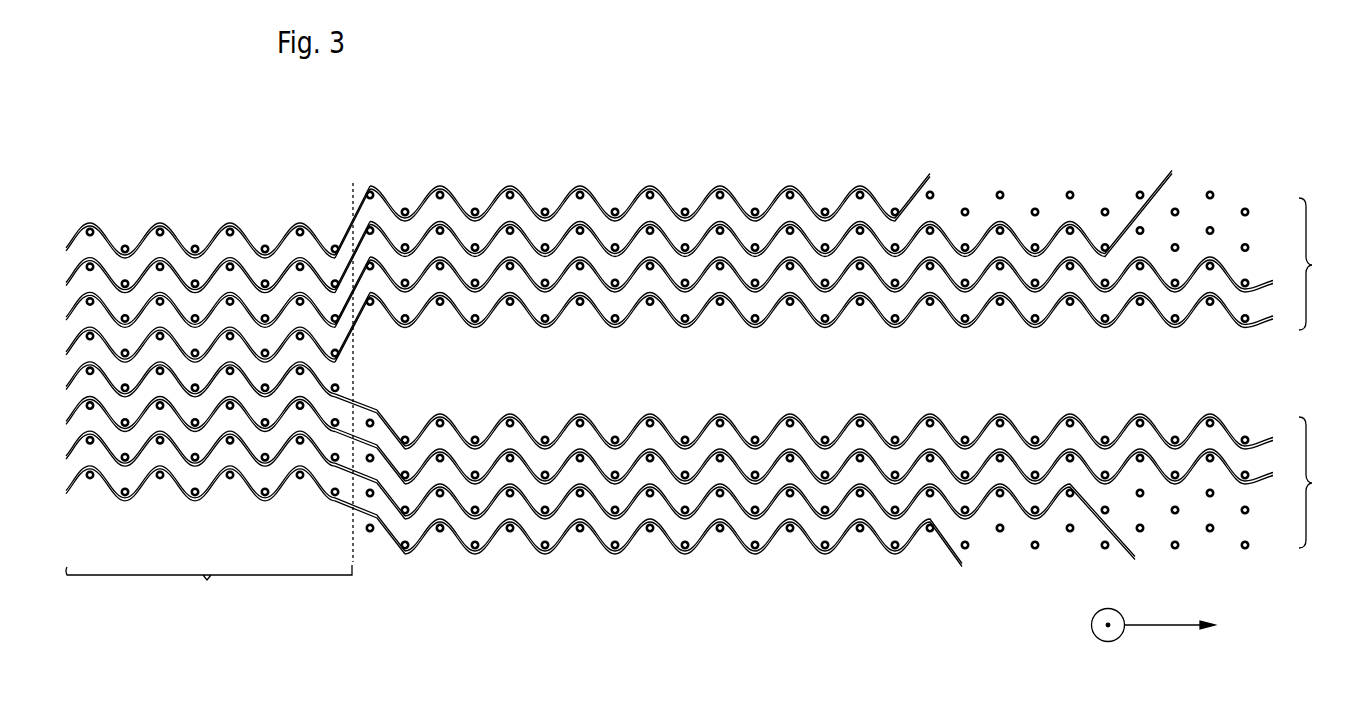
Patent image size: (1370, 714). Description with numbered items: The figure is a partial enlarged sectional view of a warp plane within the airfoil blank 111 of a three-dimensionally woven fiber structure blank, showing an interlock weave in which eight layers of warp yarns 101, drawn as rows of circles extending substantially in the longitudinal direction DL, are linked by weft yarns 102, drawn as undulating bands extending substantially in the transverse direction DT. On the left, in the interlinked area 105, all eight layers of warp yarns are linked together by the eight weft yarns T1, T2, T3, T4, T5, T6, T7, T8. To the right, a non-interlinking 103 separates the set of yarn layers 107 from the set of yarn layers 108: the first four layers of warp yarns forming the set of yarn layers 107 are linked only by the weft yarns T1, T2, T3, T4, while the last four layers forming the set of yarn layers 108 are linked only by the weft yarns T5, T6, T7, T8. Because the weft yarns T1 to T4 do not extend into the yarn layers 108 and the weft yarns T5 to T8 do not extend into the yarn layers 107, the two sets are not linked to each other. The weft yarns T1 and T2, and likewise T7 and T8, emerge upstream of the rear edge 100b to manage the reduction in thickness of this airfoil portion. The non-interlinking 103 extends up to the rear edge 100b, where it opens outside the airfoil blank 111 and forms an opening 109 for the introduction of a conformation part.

The rear edge 100b is at (1265, 204).
The warp yarns 101 is at (263, 240).
The weft yarns 102 is at (132, 240).
The non-interlinking 103 is at (630, 381).
The interlinked area 105 is at (224, 608).
The set of yarn layers 107 is at (1323, 264).
The set of yarn layers 108 is at (1323, 482).
The opening 109 is at (1242, 380).
The airfoil blank 111 is at (783, 126).
The weft yarn T1 is at (478, 206).
The weft yarn T2 is at (66, 284).
The weft yarn T3 is at (66, 318).
The weft yarn T4 is at (66, 353).
The weft yarn T5 is at (66, 388).
The weft yarn T6 is at (66, 422).
The weft yarn T7 is at (66, 457).
The weft yarn T8 is at (66, 492).
The transverse direction DT is at (1182, 628).
The longitudinal direction DL is at (1108, 639).